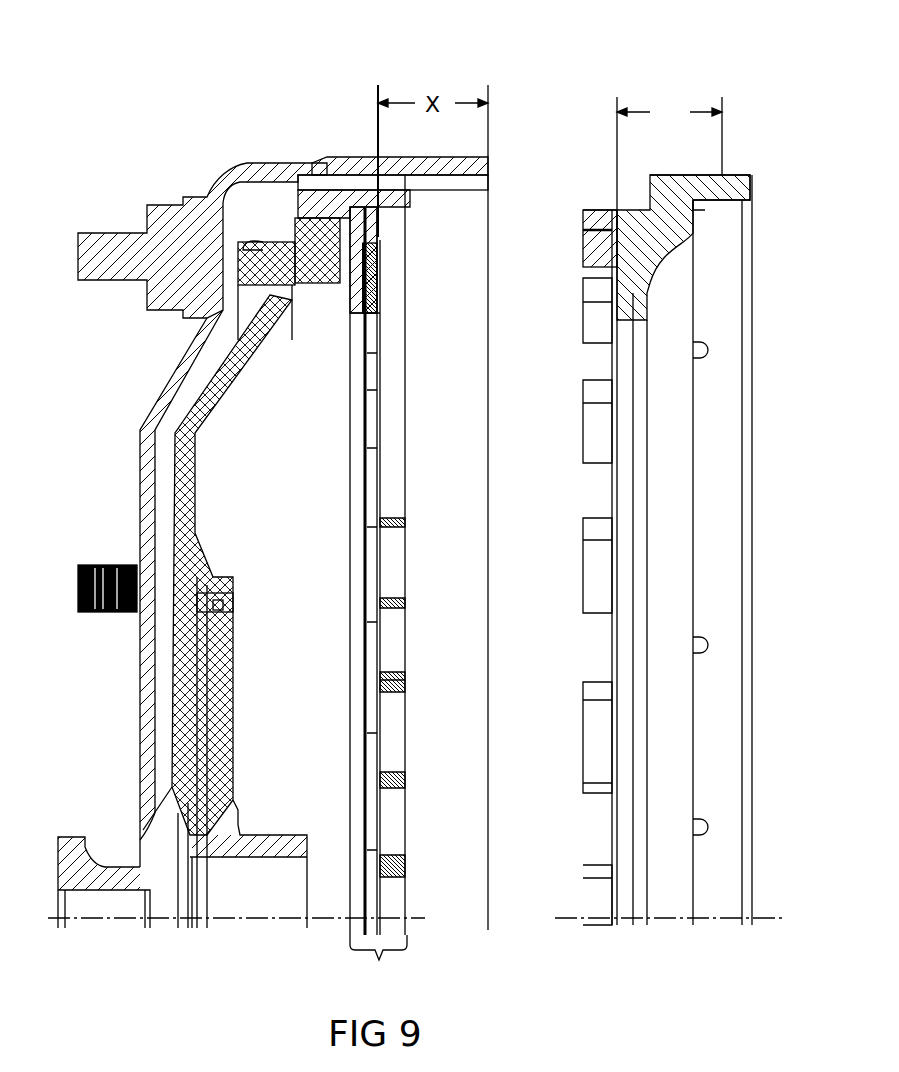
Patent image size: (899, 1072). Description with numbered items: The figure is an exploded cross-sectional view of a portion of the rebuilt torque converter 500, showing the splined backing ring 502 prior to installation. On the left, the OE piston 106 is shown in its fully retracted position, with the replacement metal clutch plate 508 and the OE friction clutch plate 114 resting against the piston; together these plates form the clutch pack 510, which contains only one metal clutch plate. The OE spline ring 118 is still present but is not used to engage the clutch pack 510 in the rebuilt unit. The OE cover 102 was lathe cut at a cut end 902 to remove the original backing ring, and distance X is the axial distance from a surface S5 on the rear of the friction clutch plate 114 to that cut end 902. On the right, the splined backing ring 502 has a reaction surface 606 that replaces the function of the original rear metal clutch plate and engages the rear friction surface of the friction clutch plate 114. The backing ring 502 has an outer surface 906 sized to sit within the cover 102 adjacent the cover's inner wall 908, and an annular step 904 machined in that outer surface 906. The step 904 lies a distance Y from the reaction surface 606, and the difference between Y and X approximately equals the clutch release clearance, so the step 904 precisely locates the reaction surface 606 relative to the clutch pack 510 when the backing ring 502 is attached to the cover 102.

The OE cover 102 is at (227, 170).
The OE piston 106 is at (213, 382).
The OE friction clutch plate 114 is at (365, 237).
The OE spline ring 118 is at (390, 833).
The rebuilt torque converter 500 is at (693, 467).
The splined backing ring 502 is at (748, 250).
The replacement metal clutch plate 508 is at (360, 233).
The clutch pack 510 is at (378, 963).
The reaction surface 606 is at (603, 240).
The cut end 902 is at (488, 168).
The step 904 is at (723, 168).
The outer surface 906 is at (690, 172).
The inner wall 908 is at (433, 173).
The surface S5 is at (377, 243).